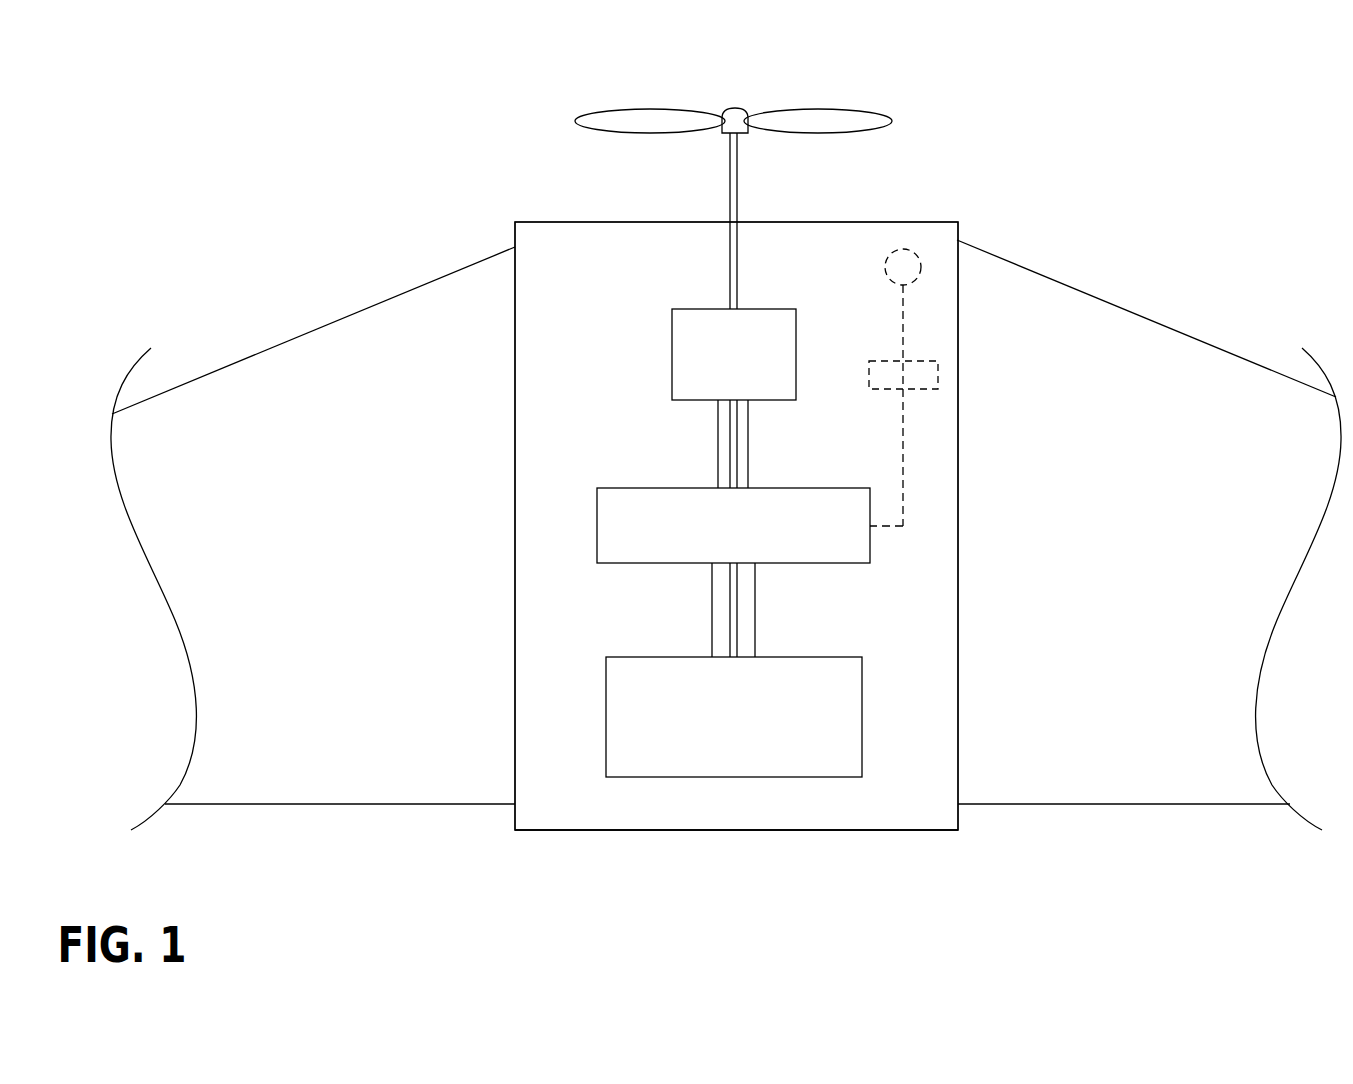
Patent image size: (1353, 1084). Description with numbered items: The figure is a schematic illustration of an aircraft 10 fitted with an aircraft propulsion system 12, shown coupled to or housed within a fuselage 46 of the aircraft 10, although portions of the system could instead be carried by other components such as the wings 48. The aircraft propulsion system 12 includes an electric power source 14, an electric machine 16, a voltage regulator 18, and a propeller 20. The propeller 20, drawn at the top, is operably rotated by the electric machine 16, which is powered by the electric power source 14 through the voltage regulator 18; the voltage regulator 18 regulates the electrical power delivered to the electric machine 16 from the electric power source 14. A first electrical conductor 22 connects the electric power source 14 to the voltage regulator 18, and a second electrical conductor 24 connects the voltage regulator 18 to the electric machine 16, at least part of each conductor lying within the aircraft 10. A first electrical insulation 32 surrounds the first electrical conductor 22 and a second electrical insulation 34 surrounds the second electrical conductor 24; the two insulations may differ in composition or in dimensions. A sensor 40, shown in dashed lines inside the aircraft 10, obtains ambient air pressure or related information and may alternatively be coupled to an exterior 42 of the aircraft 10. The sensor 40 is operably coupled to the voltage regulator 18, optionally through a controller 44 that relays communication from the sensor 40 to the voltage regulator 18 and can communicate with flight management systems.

The aircraft 10 is at (1182, 93).
The aircraft propulsion system 12 is at (653, 257).
The electric power source 14 is at (862, 723).
The electric machine 16 is at (672, 335).
The voltage regulator 18 is at (597, 523).
The propeller 20 is at (863, 110).
The first electrical conductor 22 is at (737, 632).
The second electrical conductor 24 is at (733, 457).
The first electrical insulation 32 is at (757, 598).
The second electrical insulation 34 is at (717, 418).
The sensor 40 is at (903, 245).
The exterior 42 is at (958, 445).
The controller 44 is at (938, 361).
The fuselage 46 is at (767, 830).
The wings 48 is at (338, 804).